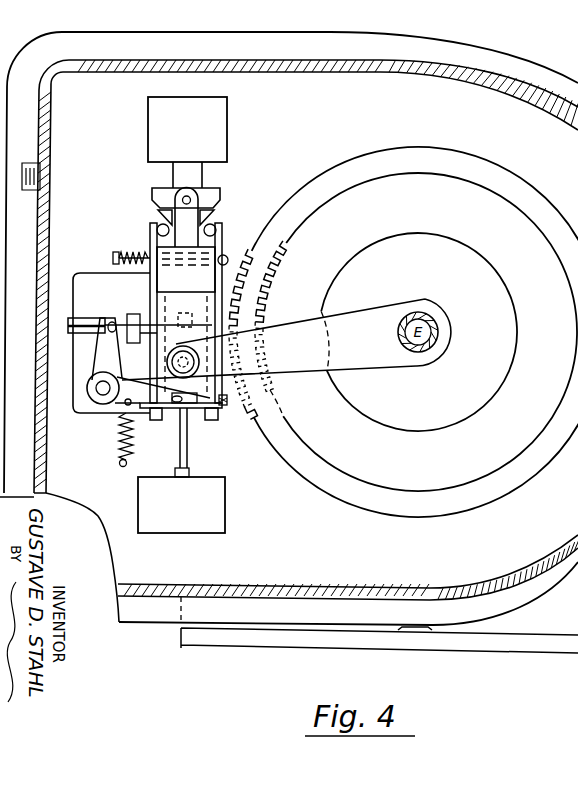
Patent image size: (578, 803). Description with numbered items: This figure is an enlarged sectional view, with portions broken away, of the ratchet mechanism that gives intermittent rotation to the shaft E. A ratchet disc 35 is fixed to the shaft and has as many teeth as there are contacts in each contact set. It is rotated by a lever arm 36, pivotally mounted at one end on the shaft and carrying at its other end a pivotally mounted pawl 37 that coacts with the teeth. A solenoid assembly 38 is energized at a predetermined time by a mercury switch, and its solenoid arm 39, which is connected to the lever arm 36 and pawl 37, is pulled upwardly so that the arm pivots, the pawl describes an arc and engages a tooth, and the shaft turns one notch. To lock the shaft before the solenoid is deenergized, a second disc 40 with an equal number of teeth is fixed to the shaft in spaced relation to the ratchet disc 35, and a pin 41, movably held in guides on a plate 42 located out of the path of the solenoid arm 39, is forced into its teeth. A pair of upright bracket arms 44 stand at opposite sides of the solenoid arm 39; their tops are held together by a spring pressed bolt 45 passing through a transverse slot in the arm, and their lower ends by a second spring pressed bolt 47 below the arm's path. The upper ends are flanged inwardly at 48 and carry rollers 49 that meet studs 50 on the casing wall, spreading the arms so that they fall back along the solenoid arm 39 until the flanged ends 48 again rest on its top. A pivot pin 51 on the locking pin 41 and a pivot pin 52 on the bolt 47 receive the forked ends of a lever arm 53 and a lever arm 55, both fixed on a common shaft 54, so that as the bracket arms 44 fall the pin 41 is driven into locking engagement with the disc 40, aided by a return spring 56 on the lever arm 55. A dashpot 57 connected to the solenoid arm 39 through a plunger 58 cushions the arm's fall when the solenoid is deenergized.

The ratchet disc 35 is at (419, 341).
The lever arm 36 is at (423, 332).
The pawl 37 is at (278, 264).
The solenoid assembly 38 is at (222, 148).
The solenoid arm 39 is at (186, 292).
The second disc 40 is at (415, 332).
The pin 41 is at (68, 322).
The plate 42 is at (86, 275).
The bracket arms 44 is at (150, 238).
The spring pressed bolt 45 is at (116, 257).
The spring pressed bolt 47 is at (222, 406).
The flanged ends 48 is at (160, 228).
The rollers 49 is at (210, 212).
The studs 50 is at (160, 213).
The pivot pin 51 is at (112, 316).
The pivot pin 52 is at (192, 412).
The lever arm 53 is at (104, 362).
The shaft 54 is at (118, 400).
The lever arm 55 is at (120, 420).
The return spring 56 is at (120, 465).
The dashpot 57 is at (181, 505).
The plunger 58 is at (187, 442).